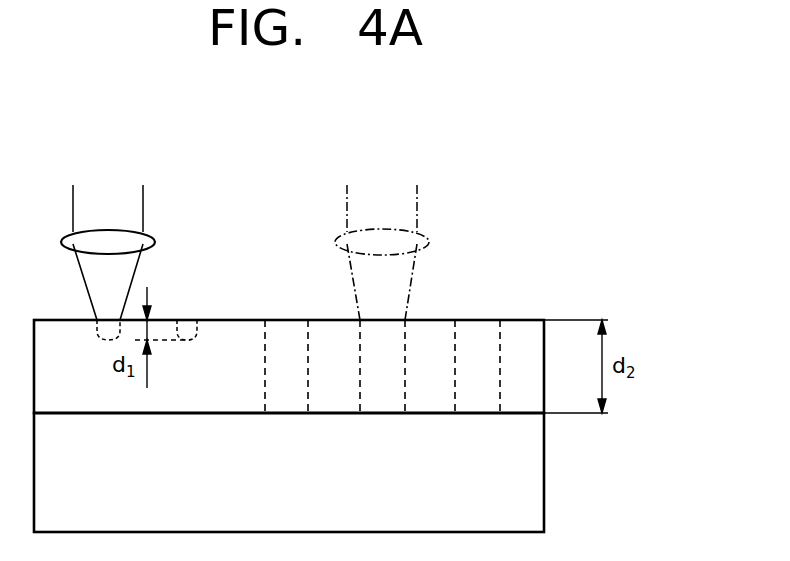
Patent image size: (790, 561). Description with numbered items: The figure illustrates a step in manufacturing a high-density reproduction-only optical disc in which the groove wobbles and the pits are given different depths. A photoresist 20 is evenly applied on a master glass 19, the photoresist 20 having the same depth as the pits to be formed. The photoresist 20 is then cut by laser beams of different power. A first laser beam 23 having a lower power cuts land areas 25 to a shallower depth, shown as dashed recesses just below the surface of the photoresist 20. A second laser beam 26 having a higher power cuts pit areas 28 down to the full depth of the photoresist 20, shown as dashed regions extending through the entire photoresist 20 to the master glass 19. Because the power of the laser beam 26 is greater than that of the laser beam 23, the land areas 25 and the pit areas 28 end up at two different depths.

The master glass 19 is at (530, 490).
The photoresist 20 is at (532, 340).
The laser beam 23 is at (161, 217).
The land areas 25 is at (183, 320).
The laser beam 26 is at (438, 227).
The pit areas 28 is at (290, 333).